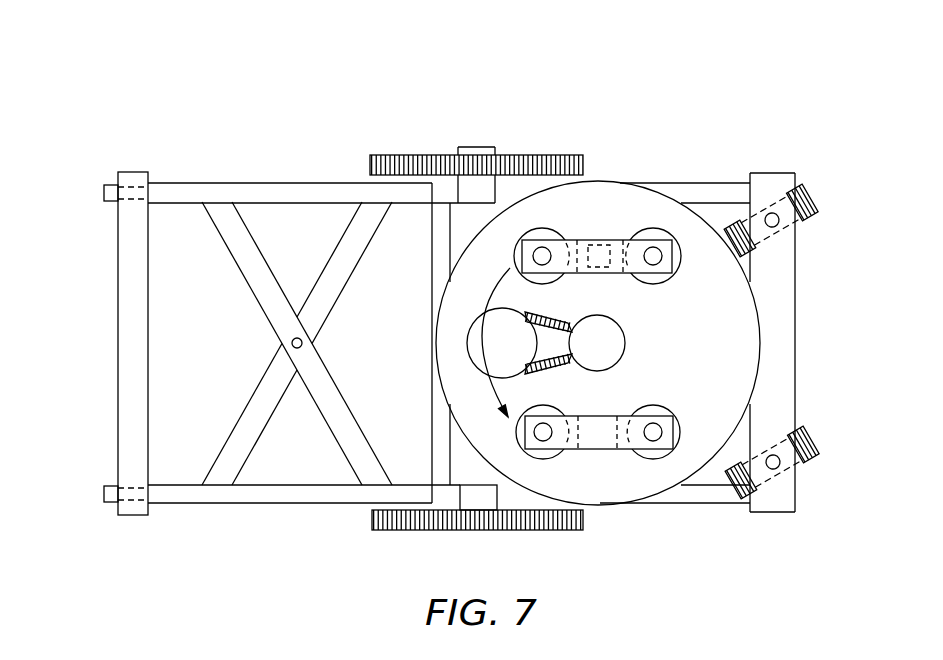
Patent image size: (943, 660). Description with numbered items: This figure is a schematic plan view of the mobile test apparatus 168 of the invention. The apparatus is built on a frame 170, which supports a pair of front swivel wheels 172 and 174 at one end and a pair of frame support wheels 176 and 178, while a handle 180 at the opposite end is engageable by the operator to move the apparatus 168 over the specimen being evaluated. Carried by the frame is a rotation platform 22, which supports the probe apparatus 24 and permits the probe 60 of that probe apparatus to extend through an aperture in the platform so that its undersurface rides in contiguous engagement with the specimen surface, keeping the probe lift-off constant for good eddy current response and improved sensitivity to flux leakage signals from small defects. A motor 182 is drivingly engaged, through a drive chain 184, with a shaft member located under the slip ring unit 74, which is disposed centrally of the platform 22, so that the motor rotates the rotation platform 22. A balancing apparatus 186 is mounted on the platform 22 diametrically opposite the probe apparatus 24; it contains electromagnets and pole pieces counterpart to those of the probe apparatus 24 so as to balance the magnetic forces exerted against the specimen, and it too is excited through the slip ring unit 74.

The mobile test apparatus 168 is at (705, 92).
The frame 170 is at (278, 183).
The front swivel wheel 172 is at (803, 193).
The front swivel wheel 174 is at (808, 430).
The frame support wheel 176 is at (520, 156).
The frame support wheel 178 is at (370, 522).
The handle 180 is at (127, 330).
The motor 182 is at (475, 337).
The drive chain 184 is at (552, 323).
The balancing apparatus 186 is at (628, 398).
The rotation platform 22 is at (740, 359).
The probe apparatus 24 is at (582, 228).
The probe 60 is at (601, 243).
The slip ring unit 74 is at (613, 342).